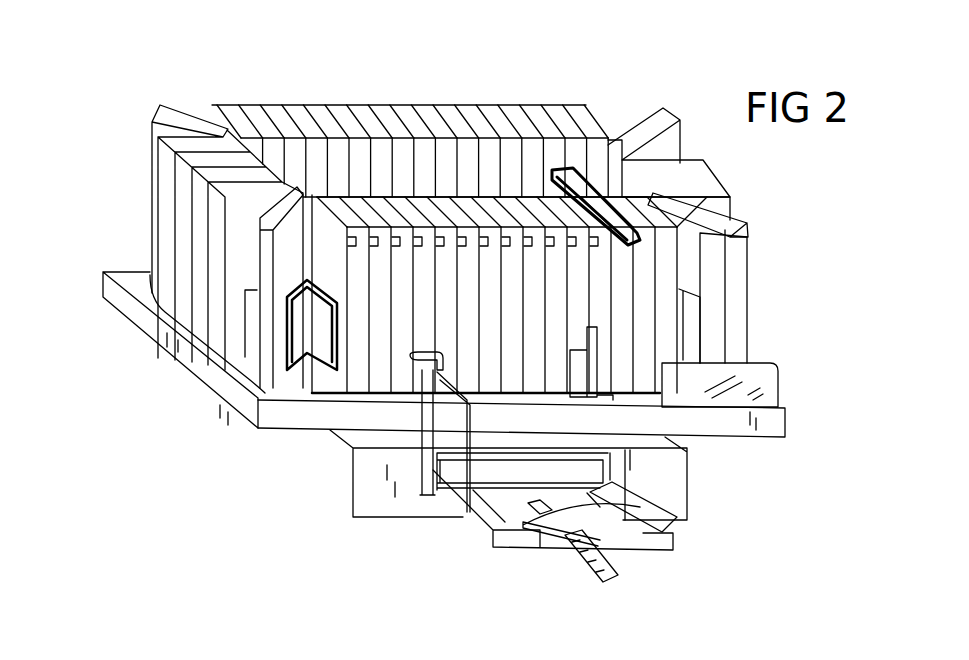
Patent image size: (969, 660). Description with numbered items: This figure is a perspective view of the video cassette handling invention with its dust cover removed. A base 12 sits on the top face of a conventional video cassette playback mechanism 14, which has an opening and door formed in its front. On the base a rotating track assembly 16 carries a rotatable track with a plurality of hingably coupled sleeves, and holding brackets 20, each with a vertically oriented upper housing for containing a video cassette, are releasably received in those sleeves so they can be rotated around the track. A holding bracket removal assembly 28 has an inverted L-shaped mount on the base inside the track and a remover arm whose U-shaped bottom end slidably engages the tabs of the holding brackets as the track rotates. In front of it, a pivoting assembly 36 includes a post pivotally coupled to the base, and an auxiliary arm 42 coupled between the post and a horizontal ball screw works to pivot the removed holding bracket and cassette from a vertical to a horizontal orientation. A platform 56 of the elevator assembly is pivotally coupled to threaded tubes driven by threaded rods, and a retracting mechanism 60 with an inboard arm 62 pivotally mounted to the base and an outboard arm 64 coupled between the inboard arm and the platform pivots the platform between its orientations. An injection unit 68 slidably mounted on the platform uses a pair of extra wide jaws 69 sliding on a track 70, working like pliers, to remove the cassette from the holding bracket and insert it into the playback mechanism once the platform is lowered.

The base 12 is at (786, 423).
The video cassette playback mechanism 14 is at (670, 477).
The rotating track assembly 16 is at (150, 266).
The holding brackets 20 is at (293, 340).
The holding bracket removal assembly 28 is at (591, 178).
The pivoting assembly 36 is at (572, 338).
The auxiliary arm 42 is at (720, 385).
The platform 56 is at (484, 530).
The retracting mechanism 60 is at (378, 373).
The inboard arm 62 is at (423, 405).
The outboard arm 64 is at (426, 488).
The injection unit 68 is at (624, 578).
The jaws 69 is at (560, 522).
The track 70 is at (667, 520).